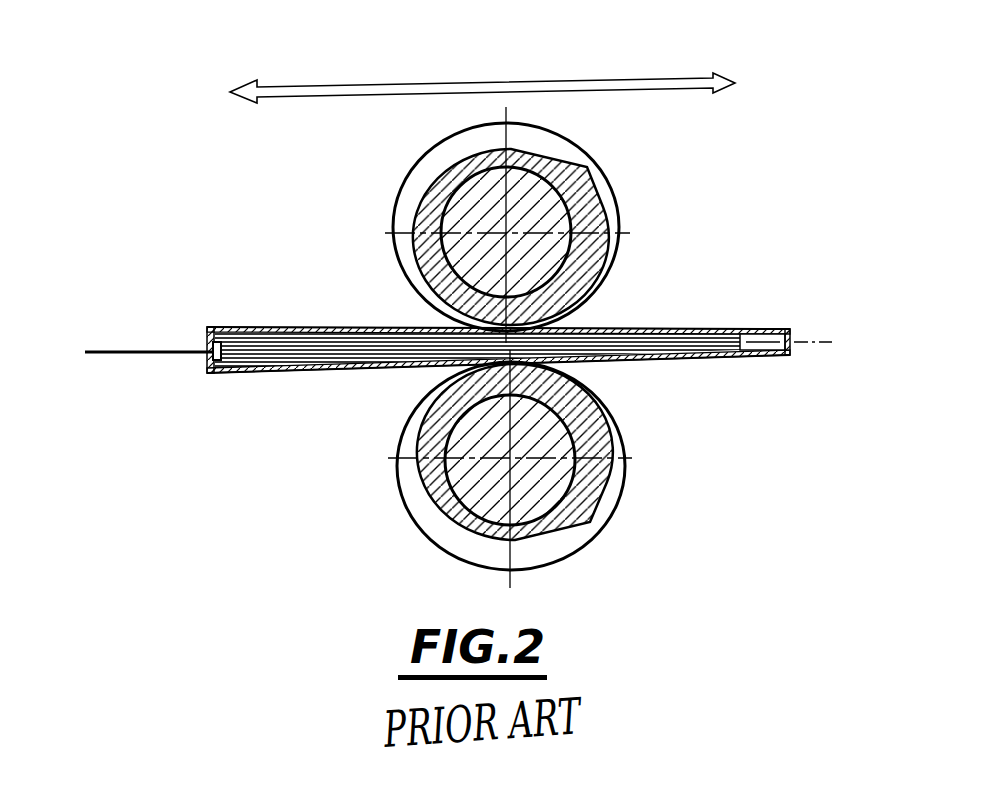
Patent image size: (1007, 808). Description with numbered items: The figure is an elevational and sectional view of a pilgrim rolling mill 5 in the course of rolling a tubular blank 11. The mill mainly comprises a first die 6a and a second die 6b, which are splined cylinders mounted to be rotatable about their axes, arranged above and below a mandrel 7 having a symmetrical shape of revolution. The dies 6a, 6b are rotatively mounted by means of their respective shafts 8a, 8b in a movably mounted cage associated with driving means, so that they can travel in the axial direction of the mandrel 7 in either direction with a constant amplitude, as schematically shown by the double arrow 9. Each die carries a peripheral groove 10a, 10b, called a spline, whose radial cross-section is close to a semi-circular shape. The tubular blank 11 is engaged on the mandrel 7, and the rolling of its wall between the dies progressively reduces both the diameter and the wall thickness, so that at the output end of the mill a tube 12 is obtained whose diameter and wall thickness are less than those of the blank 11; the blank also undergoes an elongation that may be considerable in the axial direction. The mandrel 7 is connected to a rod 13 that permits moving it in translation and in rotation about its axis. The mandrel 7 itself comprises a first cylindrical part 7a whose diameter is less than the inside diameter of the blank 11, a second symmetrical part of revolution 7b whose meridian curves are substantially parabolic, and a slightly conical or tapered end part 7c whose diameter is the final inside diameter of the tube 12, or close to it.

The pilgrim rolling mill 5 is at (546, 347).
The first die 6a is at (593, 207).
The second die 6b is at (612, 470).
The mandrel 7 is at (497, 349).
The first cylindrical part 7a is at (247, 360).
The second symmetrical part of revolution 7b is at (632, 350).
The tapered end part 7c is at (720, 356).
The shaft 8a is at (485, 208).
The shaft 8b is at (532, 481).
The double arrow 9 is at (668, 80).
The peripheral groove 10a is at (397, 238).
The peripheral groove 10b is at (418, 507).
The tubular blank 11 is at (210, 372).
The tube 12 is at (790, 330).
The rod 13 is at (113, 349).